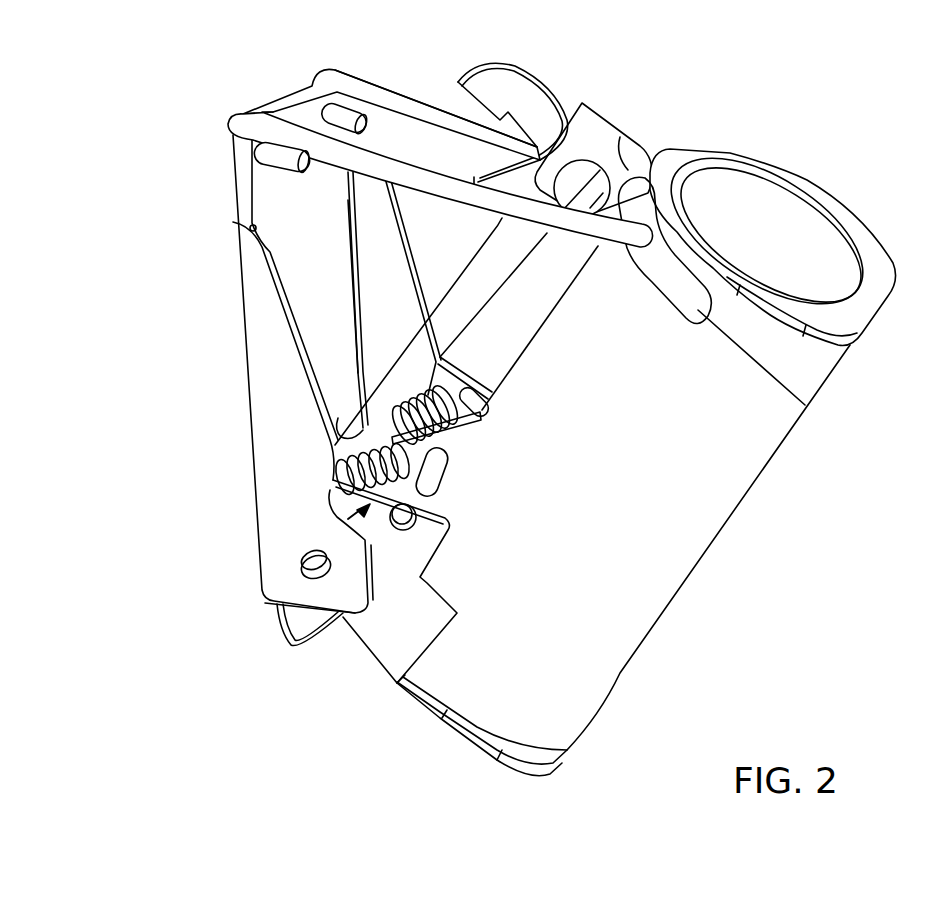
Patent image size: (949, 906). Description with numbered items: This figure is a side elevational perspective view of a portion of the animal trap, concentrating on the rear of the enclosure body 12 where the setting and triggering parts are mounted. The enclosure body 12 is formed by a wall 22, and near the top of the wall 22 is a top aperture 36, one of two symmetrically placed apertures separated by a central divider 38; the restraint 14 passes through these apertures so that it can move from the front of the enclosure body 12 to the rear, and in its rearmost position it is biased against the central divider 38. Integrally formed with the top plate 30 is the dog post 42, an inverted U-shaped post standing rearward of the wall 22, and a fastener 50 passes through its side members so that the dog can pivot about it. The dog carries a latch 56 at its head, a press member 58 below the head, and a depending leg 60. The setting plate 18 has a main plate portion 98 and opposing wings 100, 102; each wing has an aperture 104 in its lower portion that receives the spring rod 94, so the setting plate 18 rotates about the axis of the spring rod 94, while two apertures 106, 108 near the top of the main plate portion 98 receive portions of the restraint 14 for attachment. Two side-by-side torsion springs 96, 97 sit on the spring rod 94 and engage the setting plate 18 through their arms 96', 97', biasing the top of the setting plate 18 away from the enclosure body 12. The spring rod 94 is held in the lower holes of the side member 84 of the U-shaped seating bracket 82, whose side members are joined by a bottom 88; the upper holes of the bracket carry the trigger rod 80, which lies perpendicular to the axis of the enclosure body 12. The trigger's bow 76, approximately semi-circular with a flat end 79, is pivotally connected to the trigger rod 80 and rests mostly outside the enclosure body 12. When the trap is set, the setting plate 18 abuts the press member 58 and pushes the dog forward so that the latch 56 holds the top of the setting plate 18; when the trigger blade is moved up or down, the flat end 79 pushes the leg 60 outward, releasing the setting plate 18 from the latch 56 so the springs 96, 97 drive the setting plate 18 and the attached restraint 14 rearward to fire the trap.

The enclosure body 12 is at (655, 505).
The restraint 14 is at (402, 170).
The setting plate 18 is at (290, 305).
The wall 22 is at (657, 407).
The top plate 30 is at (823, 337).
The top aperture 36 is at (805, 412).
The central divider 38 is at (638, 153).
The dog post 42 is at (602, 190).
The fastener 50 is at (622, 135).
The latch 56 is at (519, 104).
The press member 58 is at (498, 190).
The leg 60 is at (470, 292).
The bow 76 is at (436, 429).
The flat end 79 is at (477, 412).
The trigger rod 80 is at (433, 473).
The seating bracket 82 is at (358, 508).
The side member 84 is at (388, 638).
The bottom 88 is at (447, 387).
The spring rod 94 is at (313, 570).
The torsion spring 96 is at (420, 286).
The arm 96' is at (379, 286).
The torsion spring 97 is at (291, 334).
The arm 97' is at (180, 242).
The main plate portion 98 is at (325, 272).
The wing 100 is at (280, 427).
The wing 102 is at (375, 238).
The aperture 104 is at (340, 620).
The aperture 106 is at (250, 170).
The aperture 108 is at (330, 123).